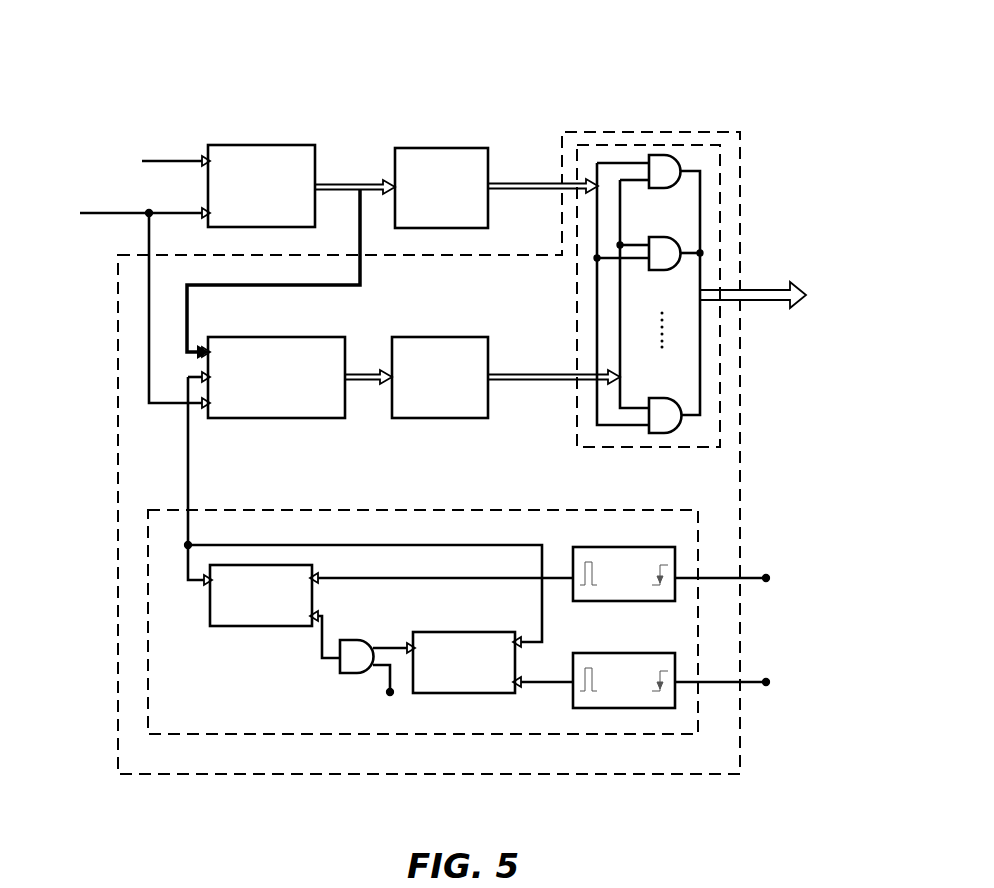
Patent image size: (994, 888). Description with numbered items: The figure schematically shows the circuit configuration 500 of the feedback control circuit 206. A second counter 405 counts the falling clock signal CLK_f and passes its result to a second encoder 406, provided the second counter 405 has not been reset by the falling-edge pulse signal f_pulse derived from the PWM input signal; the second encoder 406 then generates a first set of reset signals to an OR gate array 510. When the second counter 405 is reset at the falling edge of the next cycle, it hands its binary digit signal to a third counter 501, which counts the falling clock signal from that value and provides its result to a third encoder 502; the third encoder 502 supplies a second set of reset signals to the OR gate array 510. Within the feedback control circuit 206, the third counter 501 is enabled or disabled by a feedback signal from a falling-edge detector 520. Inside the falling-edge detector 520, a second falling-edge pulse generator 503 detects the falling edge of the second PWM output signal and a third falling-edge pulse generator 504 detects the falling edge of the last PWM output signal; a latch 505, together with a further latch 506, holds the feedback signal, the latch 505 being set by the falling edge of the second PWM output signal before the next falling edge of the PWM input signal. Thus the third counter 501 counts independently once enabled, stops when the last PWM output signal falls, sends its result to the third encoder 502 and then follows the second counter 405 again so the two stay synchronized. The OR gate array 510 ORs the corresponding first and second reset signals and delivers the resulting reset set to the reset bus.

The PWM generation circuit 500 is at (735, 70).
The second counter 405 is at (257, 144).
The second encoder 406 is at (442, 147).
The third counter 501 is at (347, 336).
The third encoder 502 is at (437, 336).
The second falling-edge pulse generator 503 is at (600, 547).
The third falling-edge pulse generator 504 is at (600, 653).
The latch 505 is at (440, 631).
The first latch 506 is at (248, 628).
The OR gate array 510 is at (722, 368).
The falling-edge detector 520 is at (262, 737).
The feedback control circuit 206 is at (352, 775).